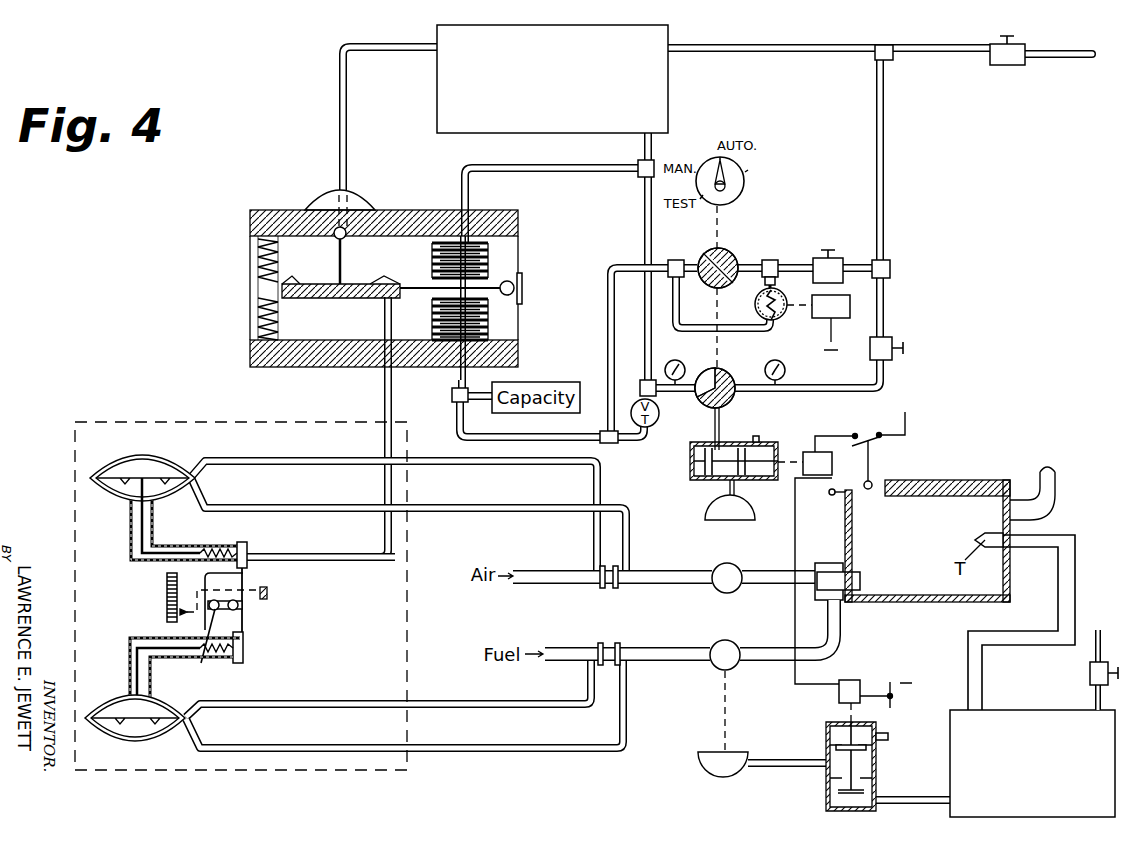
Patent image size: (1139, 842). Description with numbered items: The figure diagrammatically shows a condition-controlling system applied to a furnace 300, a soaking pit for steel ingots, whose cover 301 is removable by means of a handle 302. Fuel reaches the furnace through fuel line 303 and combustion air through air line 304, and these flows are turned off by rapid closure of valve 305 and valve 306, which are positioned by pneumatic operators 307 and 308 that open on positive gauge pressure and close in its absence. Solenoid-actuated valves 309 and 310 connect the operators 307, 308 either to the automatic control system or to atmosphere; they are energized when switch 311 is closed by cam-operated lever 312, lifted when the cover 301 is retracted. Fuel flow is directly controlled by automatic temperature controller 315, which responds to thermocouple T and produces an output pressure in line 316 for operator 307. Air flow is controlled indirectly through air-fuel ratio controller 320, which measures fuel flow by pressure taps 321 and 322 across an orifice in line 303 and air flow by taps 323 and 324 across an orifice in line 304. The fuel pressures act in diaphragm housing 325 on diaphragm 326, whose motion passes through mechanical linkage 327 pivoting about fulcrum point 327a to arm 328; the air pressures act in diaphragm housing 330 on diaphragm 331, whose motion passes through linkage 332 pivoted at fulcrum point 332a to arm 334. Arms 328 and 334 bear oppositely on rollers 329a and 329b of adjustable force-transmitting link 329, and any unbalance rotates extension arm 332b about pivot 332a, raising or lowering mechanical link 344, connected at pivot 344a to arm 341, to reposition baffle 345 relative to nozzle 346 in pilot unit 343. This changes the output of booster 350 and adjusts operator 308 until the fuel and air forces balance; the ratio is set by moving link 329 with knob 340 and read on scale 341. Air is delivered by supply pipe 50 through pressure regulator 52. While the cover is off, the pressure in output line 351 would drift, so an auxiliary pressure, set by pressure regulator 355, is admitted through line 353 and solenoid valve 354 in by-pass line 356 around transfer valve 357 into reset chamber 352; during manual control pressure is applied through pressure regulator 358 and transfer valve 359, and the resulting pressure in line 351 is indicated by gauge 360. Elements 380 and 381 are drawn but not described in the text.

The supply pipe 50 is at (1086, 60).
The pressure regulator 52 is at (1003, 67).
The furnace 300 is at (902, 557).
The cover 301 is at (955, 482).
The handle 302 is at (832, 499).
The fuel line 303 is at (752, 647).
The air line 304 is at (765, 571).
The fuel valve 305 is at (718, 644).
The air valve 306 is at (716, 566).
The pneumatic operator 307 is at (702, 766).
The pneumatic operator 308 is at (705, 515).
The solenoid-actuated valve 309 is at (826, 793).
The solenoid-actuated valve 310 is at (768, 442).
The switch 311 is at (858, 445).
The cam-operated lever 312 is at (873, 472).
The automatic temperature controller 315 is at (1013, 782).
The output line 316 is at (888, 798).
The air-fuel ratio controller 320 is at (330, 624).
The pressure tap 321 is at (588, 676).
The pressure tap 322 is at (626, 724).
The pressure tap 323 is at (596, 546).
The pressure tap 324 is at (621, 505).
The diaphragm housing 325 is at (115, 703).
The diaphragm 326 is at (150, 728).
The mechanical linkage 327 is at (136, 646).
The fulcrum point 327a is at (226, 662).
The arm 328 is at (244, 607).
The adjustable force-transmitting link 329 is at (238, 603).
The roller 329a is at (245, 650).
The roller 329b is at (203, 664).
The diaphragm housing 330 is at (174, 466).
The diaphragm 331 is at (130, 476).
The mechanical linkage 332 is at (152, 548).
The fulcrum point 332a is at (228, 550).
The extension arm 332b is at (320, 556).
The arm 334 is at (202, 580).
The knob 340 is at (268, 594).
The scale 341 is at (166, 604).
The pilot unit 343 is at (398, 211).
The mechanical link 344 is at (385, 488).
The pivot 344a is at (396, 557).
The baffle 345 is at (398, 282).
The nozzle 346 is at (284, 255).
The booster 350 is at (672, 102).
The output line 351 is at (644, 322).
The reset chamber 352 is at (487, 330).
The line 353 is at (627, 265).
The solenoid valve 354 is at (780, 288).
The pressure regulator 355 is at (842, 262).
The by-pass line 356 is at (708, 326).
The transfer valve 357 is at (732, 258).
The pressure regulator 358 is at (890, 345).
The transfer valve 359 is at (733, 378).
The gauge 360 is at (675, 361).
The rod 380 is at (1096, 652).
The adjusting valve 381 is at (1090, 680).